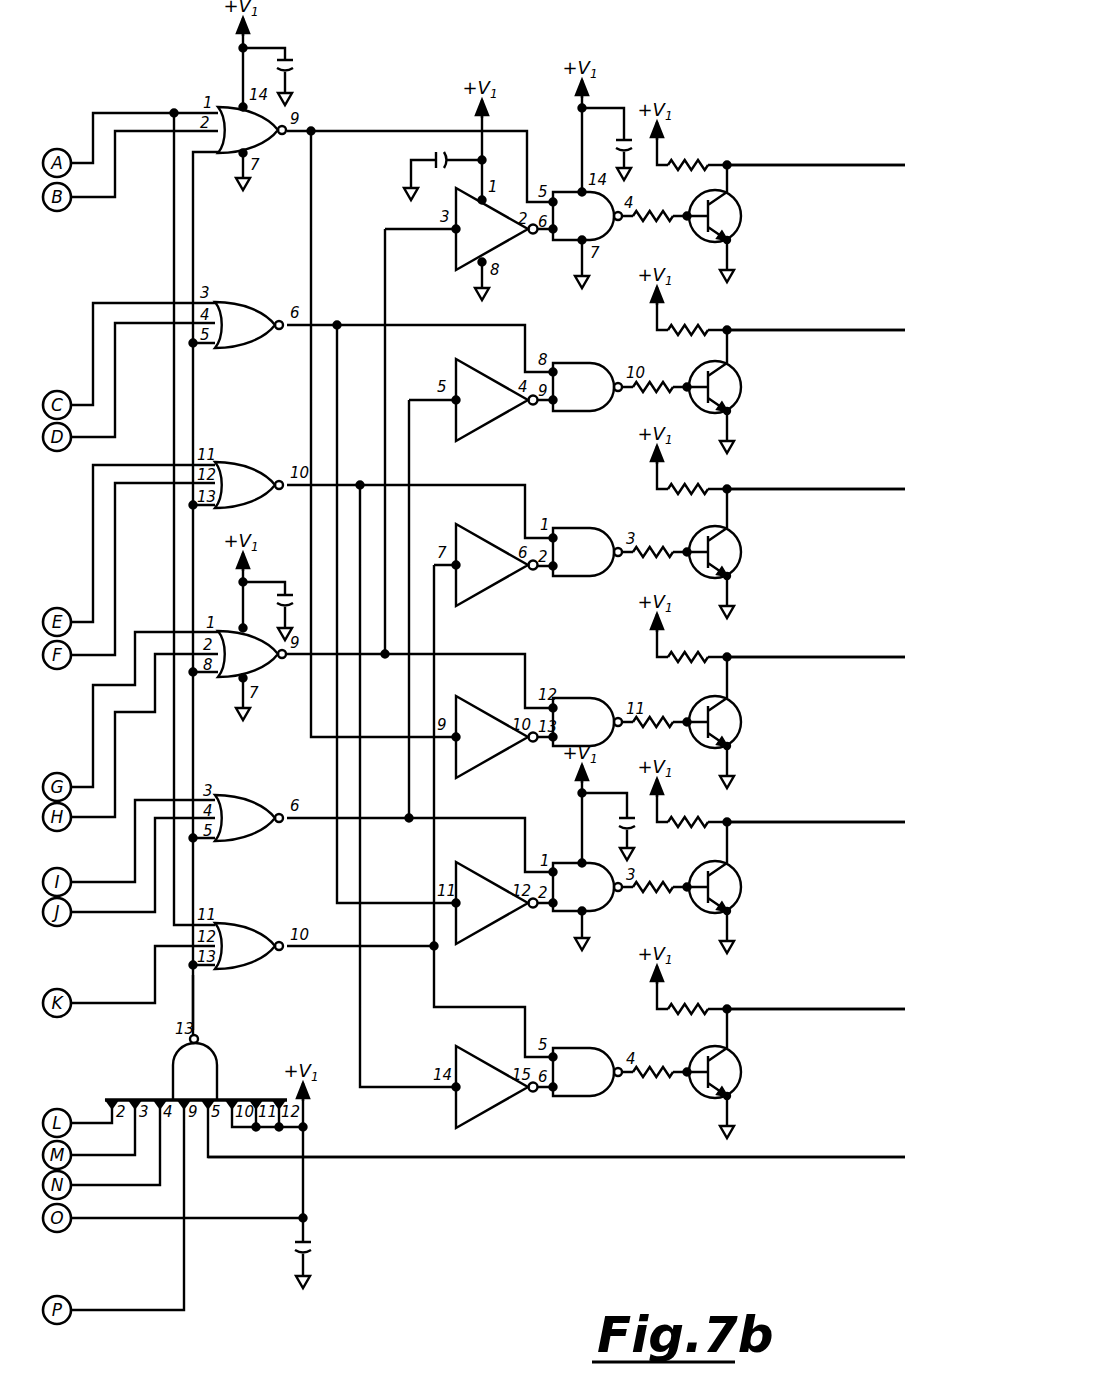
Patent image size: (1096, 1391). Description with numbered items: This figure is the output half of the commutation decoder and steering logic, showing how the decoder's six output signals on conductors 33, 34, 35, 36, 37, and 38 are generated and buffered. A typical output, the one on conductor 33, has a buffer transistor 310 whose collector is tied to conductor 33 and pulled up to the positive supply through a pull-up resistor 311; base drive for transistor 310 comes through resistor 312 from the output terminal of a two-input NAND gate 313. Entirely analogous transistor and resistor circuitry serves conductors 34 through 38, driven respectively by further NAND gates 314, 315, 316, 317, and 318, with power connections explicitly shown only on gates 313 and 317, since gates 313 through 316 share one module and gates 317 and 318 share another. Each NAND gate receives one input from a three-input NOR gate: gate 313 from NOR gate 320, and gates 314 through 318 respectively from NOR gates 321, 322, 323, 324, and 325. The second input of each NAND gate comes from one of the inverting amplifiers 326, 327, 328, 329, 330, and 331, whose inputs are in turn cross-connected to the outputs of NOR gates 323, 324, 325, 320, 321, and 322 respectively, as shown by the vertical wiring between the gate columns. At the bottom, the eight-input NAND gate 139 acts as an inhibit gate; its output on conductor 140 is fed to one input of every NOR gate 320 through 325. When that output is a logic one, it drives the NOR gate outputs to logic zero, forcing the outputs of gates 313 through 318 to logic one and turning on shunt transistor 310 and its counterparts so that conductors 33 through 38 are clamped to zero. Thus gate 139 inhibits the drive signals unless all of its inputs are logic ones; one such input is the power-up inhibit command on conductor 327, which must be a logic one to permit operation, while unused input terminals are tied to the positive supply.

The conductor 33 is at (823, 165).
The conductor 34 is at (823, 330).
The conductor 35 is at (828, 489).
The conductor 36 is at (828, 657).
The conductor 37 is at (833, 822).
The conductor 38 is at (830, 1009).
The eight-input NAND gate 139 is at (202, 1045).
The conductor 140 is at (198, 997).
The buffer transistor 310 is at (743, 216).
The pull-up resistor 311 is at (688, 160).
The resistor 312 is at (655, 208).
The two-input NAND gate 313 is at (602, 240).
The NAND gate 314 is at (583, 363).
The NAND gate 315 is at (583, 528).
The NAND gate 316 is at (593, 698).
The NAND gate 317 is at (605, 905).
The NAND gate 318 is at (578, 1048).
The three-input NOR gate 320 is at (235, 105).
The three-input NOR gate 321 is at (234, 303).
The three-input NOR gate 322 is at (237, 462).
The three-input NOR gate 323 is at (262, 677).
The three-input NOR gate 324 is at (244, 793).
The three-input NOR gate 325 is at (250, 922).
The inverting amplifier 326 is at (496, 258).
The inverting amplifier 327 is at (460, 362).
The inverting amplifier 328 is at (478, 540).
The inverting amplifier 329 is at (490, 712).
The inverting amplifier 330 is at (497, 872).
The inverting amplifier 331 is at (452, 1060).